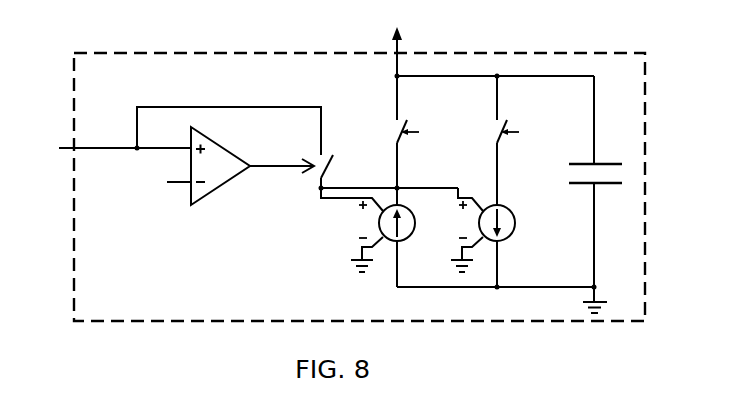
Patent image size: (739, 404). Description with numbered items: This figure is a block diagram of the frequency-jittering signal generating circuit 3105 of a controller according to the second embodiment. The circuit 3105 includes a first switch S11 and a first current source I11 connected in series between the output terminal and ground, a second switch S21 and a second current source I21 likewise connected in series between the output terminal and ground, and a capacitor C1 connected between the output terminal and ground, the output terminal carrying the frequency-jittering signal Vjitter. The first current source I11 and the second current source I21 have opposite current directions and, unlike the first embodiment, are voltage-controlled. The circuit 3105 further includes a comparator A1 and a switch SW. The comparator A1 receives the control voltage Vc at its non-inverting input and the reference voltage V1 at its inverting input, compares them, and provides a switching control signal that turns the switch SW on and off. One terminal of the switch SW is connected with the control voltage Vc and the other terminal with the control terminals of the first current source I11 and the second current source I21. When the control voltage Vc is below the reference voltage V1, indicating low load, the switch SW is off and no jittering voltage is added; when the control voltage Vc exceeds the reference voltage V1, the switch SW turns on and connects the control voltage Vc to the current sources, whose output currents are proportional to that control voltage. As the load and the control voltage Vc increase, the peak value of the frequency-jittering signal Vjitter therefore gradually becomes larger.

The frequency-jittering signal generating circuit 3105 is at (152, 308).
The comparator A1 is at (252, 182).
The reference voltage V1 is at (163, 182).
The control voltage Vc is at (171, 120).
The switch SW is at (306, 177).
The first switch S11 is at (388, 140).
The second switch S21 is at (483, 140).
The first current source I11 is at (368, 237).
The second current source I21 is at (482, 237).
The capacitor C1 is at (581, 181).
The frequency-jittering signal Vjitter is at (425, 44).